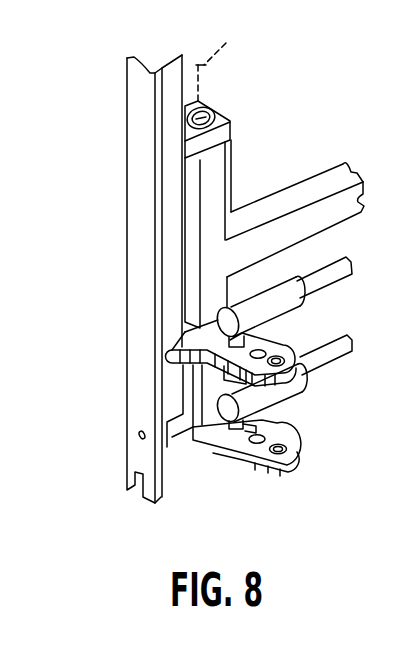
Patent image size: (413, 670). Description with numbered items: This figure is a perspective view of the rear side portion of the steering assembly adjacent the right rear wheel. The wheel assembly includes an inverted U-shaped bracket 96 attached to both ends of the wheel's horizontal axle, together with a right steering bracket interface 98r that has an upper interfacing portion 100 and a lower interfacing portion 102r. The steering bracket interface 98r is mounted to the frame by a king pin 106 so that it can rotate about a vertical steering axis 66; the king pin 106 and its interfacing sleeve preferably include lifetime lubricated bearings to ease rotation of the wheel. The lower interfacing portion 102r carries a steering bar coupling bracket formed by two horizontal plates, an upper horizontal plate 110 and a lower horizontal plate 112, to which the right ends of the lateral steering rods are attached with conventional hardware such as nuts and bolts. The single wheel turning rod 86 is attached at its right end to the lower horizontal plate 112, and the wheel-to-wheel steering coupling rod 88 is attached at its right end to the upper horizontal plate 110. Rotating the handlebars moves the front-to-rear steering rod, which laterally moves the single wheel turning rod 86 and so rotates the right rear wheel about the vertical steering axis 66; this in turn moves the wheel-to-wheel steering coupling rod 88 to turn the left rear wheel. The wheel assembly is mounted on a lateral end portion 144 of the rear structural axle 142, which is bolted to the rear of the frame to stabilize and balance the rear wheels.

The vertical steering axis 66 is at (228, 64).
The single wheel turning rod 86 is at (320, 374).
The wheel-to-wheel steering coupling rod 88 is at (325, 287).
The inverted U-shaped bracket 96 is at (132, 118).
The right steering bracket interface 98r is at (240, 158).
The upper interfacing portion 100 is at (232, 135).
The lower interfacing portion 102r is at (183, 430).
The king pin 106 is at (211, 110).
The upper horizontal plate 110 is at (278, 350).
The lower horizontal plate 112 is at (298, 447).
The rear structural axle 142 is at (317, 183).
The lateral end portion 144 is at (220, 213).